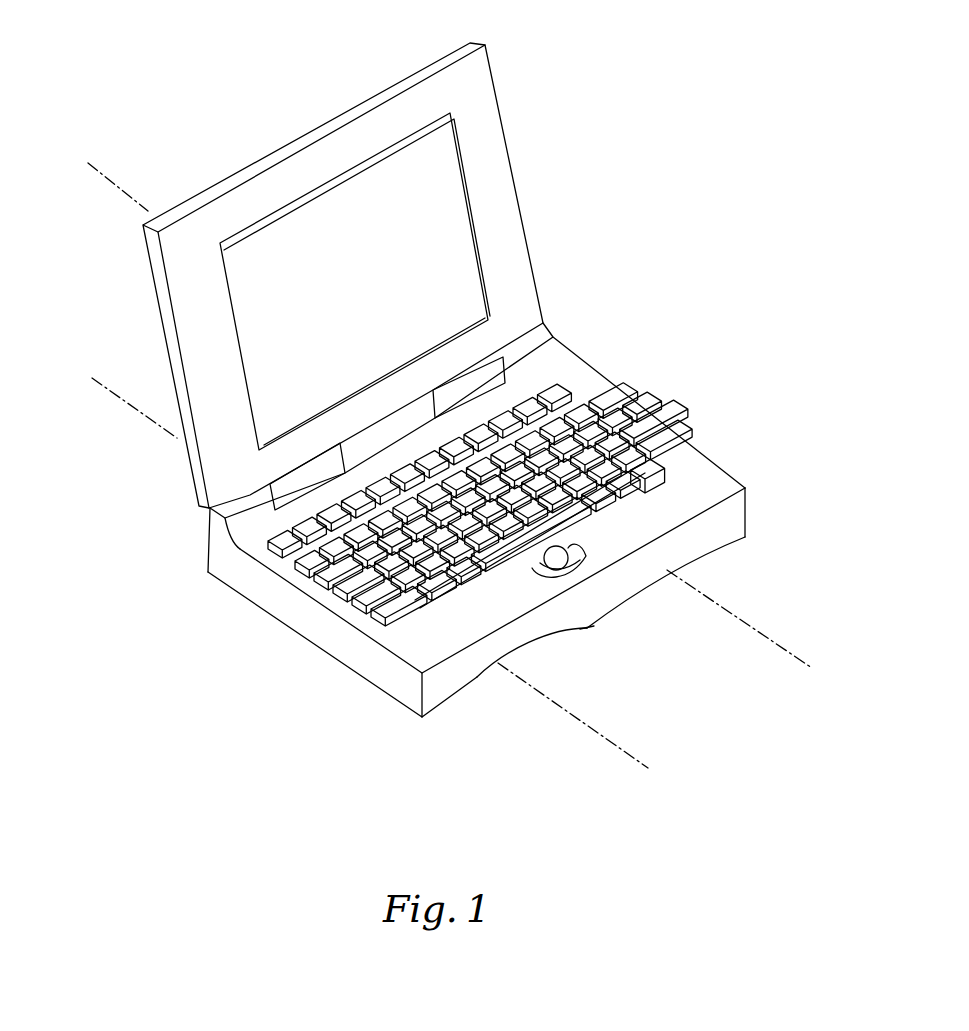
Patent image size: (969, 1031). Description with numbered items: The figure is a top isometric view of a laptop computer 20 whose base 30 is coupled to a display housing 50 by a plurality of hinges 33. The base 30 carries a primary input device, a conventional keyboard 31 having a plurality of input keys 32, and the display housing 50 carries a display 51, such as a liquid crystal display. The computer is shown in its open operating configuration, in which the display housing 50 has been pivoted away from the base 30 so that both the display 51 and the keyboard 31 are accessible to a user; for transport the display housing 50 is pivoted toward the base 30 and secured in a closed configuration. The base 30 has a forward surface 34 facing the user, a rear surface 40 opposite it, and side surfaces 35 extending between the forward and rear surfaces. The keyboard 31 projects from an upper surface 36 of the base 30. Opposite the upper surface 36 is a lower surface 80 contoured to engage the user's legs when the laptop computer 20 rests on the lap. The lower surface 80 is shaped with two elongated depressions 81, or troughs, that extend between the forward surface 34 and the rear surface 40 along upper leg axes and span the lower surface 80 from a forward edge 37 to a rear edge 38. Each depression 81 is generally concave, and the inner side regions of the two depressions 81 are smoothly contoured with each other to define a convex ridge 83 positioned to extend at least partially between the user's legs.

The laptop computer 20 is at (634, 332).
The base 30 is at (473, 516).
The keyboard 31 is at (448, 520).
The input keys 32 is at (597, 410).
The hinges 33 is at (466, 388).
The forward surface 34 is at (433, 685).
The side surfaces 35 is at (717, 468).
The upper surface 36 is at (657, 428).
The forward edge 37 is at (483, 670).
The rear edge 38 is at (213, 566).
The rear surface 40 is at (196, 545).
The display housing 50 is at (343, 275).
The display 51 is at (258, 243).
The lower surface 80 is at (635, 635).
The depressions 81 is at (524, 664).
The ridge 83 is at (596, 632).